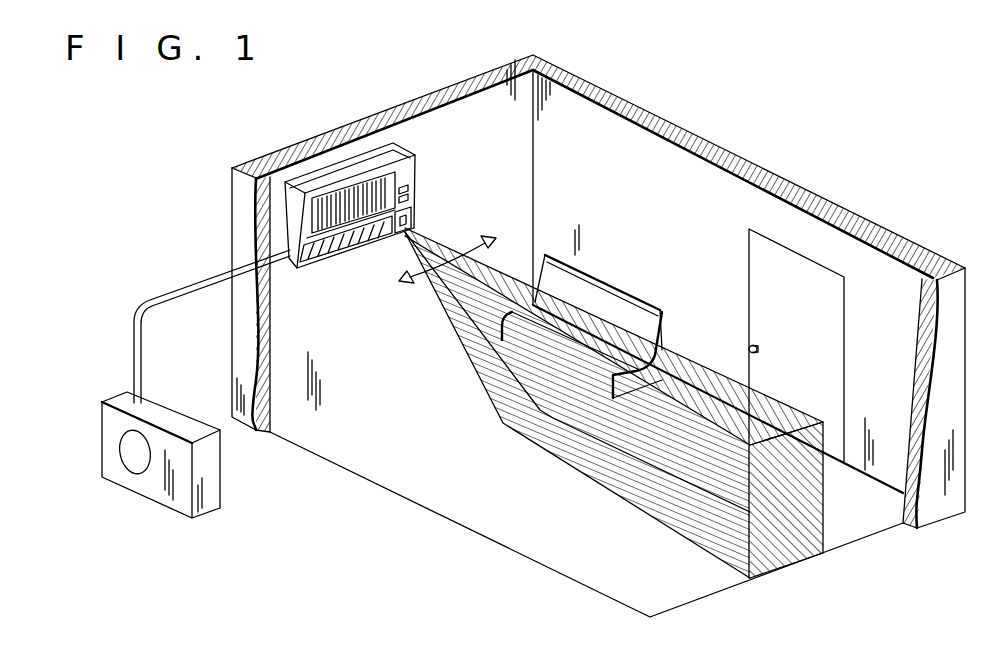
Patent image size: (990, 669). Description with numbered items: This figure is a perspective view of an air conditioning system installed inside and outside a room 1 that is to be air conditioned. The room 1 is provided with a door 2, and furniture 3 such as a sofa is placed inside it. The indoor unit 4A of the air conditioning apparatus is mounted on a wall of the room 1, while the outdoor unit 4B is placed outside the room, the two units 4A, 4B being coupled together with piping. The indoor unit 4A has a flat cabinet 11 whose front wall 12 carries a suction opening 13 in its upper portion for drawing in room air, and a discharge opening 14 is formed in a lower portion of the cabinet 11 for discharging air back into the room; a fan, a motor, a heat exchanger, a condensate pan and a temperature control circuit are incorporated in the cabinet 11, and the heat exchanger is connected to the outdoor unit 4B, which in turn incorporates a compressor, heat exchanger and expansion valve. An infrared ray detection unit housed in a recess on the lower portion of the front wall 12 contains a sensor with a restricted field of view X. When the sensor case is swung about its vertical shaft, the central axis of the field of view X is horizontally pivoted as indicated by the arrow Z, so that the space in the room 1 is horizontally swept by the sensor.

The room 1 is at (700, 167).
The door 2 is at (844, 298).
The furniture 3 is at (662, 325).
The indoor unit 4A is at (352, 164).
The outdoor unit 4B is at (215, 466).
The flat cabinet 11 is at (403, 149).
The front wall 12 is at (408, 175).
The suction opening 13 is at (328, 197).
The discharge opening 14 is at (340, 247).
The restricted field of view X is at (565, 458).
The arrow indicating horizontal pivoting Z is at (490, 241).